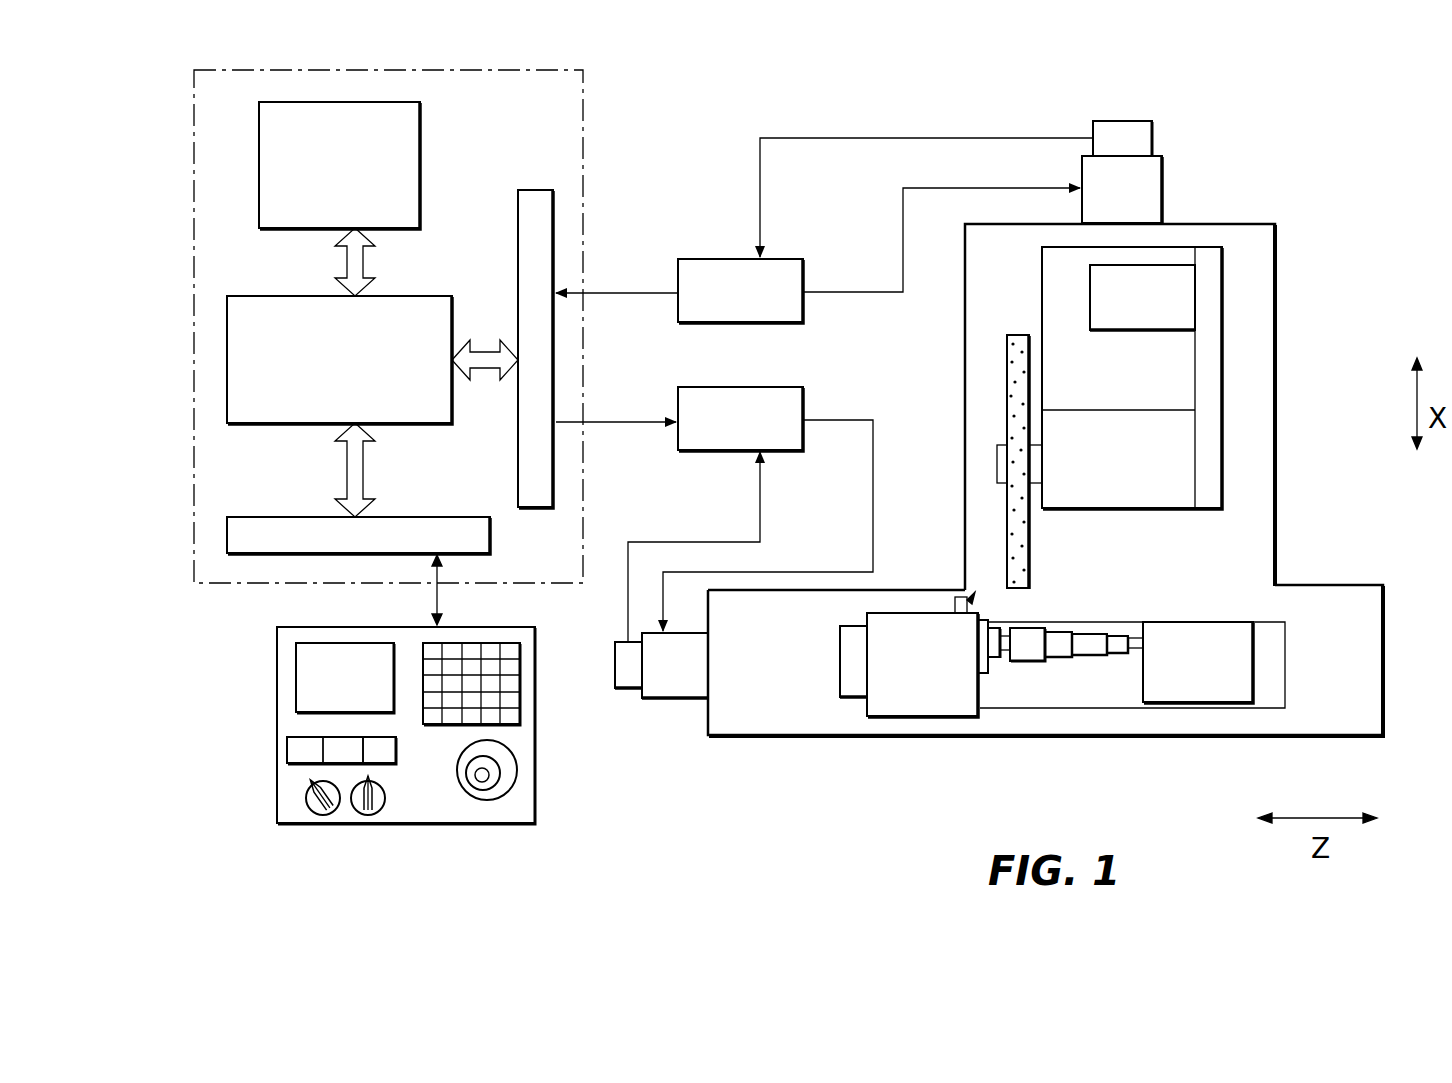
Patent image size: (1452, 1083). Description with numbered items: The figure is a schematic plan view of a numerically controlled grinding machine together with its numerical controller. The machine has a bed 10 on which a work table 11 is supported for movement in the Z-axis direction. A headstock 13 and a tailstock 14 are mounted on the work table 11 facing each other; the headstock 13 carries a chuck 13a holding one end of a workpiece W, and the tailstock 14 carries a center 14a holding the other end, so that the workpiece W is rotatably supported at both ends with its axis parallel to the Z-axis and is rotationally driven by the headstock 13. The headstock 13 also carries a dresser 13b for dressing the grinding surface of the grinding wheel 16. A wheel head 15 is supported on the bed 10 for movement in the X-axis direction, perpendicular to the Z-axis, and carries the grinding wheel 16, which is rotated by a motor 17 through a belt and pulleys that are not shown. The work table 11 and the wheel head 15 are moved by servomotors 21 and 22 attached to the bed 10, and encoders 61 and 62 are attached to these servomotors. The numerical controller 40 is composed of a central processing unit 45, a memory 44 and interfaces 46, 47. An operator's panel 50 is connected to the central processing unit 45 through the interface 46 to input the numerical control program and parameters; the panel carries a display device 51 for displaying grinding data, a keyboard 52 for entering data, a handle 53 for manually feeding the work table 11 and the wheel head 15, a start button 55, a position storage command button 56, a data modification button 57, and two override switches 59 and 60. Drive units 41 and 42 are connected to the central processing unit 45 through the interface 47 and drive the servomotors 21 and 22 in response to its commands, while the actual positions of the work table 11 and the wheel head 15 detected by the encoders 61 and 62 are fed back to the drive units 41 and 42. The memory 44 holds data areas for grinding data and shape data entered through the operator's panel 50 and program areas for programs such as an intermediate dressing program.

The bed 10 is at (1253, 381).
The work table 11 is at (1273, 697).
The headstock 13 is at (900, 706).
The chuck 13a is at (1000, 660).
The dresser 13b is at (958, 597).
The tailstock 14 is at (1198, 640).
The center 14a is at (1135, 636).
The wheel head 15 is at (1178, 483).
The grinding wheel 16 is at (988, 400).
The motor 17 is at (1185, 296).
The servomotor 21 is at (670, 690).
The servomotor 22 is at (1150, 192).
The numerical controller 40 is at (583, 88).
The drive unit 41 is at (803, 397).
The drive unit 42 is at (803, 262).
The memory 44 is at (422, 158).
The central processing unit 45 is at (227, 343).
The interface 46 is at (227, 533).
The interface 47 is at (545, 214).
The operator's panel 50 is at (224, 706).
The display device 51 is at (312, 665).
The keyboard 52 is at (497, 653).
The handle 53 is at (498, 796).
The start button 55 is at (292, 745).
The position storage command button 56 is at (335, 755).
The data modification button 57 is at (383, 755).
The override switch 59 is at (318, 815).
The override switch 60 is at (368, 815).
The encoder 61 is at (627, 682).
The encoder 62 is at (1140, 133).
The workpiece W is at (1103, 700).